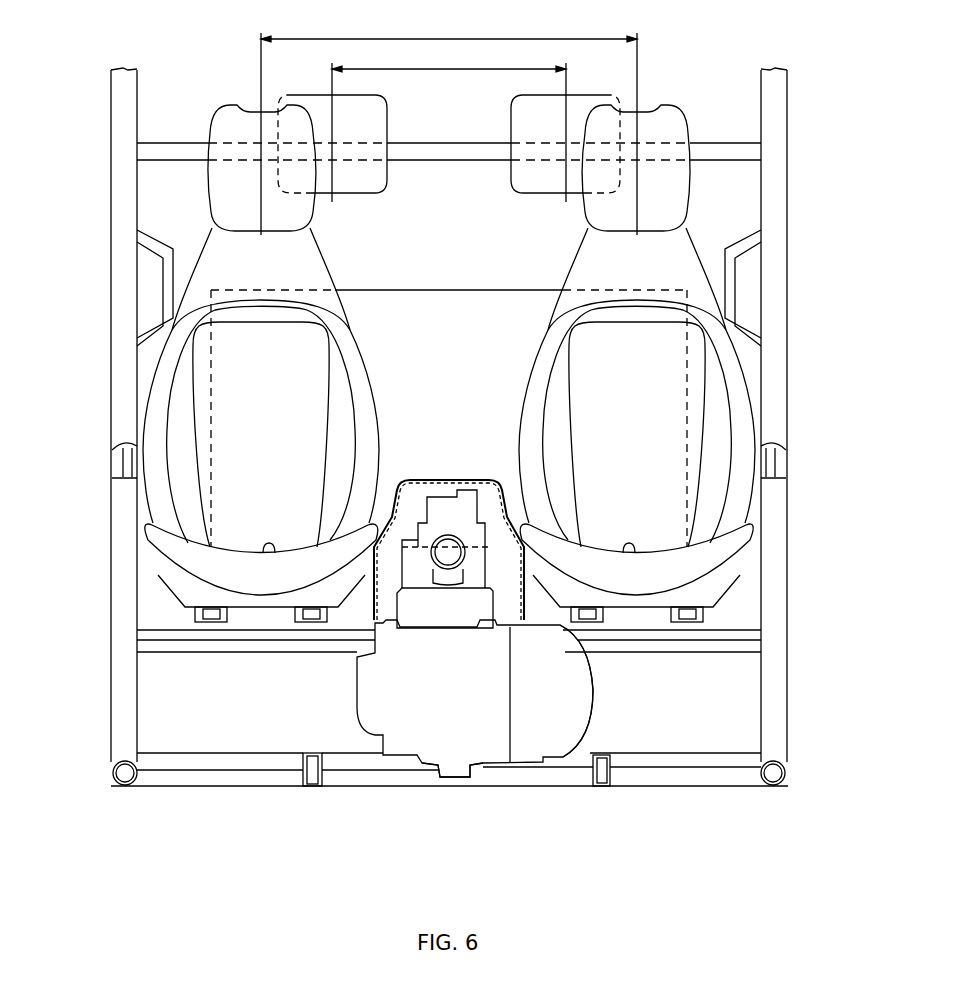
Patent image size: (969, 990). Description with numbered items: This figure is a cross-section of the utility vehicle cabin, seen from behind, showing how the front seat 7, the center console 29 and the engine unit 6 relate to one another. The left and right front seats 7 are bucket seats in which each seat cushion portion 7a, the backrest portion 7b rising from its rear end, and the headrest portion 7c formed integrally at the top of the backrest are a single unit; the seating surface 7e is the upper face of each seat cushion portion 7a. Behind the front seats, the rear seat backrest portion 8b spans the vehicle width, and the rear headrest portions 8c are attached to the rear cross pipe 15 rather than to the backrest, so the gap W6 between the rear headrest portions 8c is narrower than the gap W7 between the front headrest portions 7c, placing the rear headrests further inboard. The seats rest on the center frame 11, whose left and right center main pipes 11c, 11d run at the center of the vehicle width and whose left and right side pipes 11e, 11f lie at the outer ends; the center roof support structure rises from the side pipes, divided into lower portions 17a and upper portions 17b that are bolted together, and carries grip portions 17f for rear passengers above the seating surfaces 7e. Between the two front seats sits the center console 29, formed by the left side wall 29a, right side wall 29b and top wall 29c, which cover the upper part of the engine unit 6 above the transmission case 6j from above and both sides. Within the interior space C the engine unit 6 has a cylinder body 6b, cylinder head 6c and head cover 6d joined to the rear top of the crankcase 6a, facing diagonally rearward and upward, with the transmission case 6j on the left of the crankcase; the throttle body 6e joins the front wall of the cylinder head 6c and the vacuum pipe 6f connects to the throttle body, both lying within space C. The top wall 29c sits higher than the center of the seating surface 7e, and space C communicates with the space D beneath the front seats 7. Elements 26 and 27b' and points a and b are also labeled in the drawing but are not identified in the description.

The gap of the front seat headrest portions W7 is at (408, 38).
The gap of the rear seat headrest portions W6 is at (474, 38).
The engine unit 6 is at (475, 623).
The crankcase 6a is at (403, 740).
The cylinder body 6b is at (412, 622).
The cylinder head 6c is at (420, 580).
The head cover 6d is at (408, 540).
The throttle body 6e is at (442, 497).
The vacuum pipe 6f is at (447, 572).
The transmission case 6j is at (550, 737).
The front seat 7 is at (449, 335).
The seat cushion portion 7a is at (215, 563).
The backrest portion 7b is at (373, 401).
The headrest portion 7c is at (218, 107).
The seating surface 7e is at (255, 547).
The backrest portion of the rear seat 8b is at (433, 288).
The headrest portions of the rear seat 8c is at (287, 97).
The center frame 11 is at (506, 800).
The left center main pipe 11c is at (612, 770).
The right center main pipe 11d is at (300, 770).
The left side pipe 11e is at (787, 775).
The right side pipe 11f is at (112, 776).
The rear cross pipe 15 is at (428, 142).
The lower portions of the center roof support structure 17a is at (111, 588).
The upper portions of the center roof support structure 17b is at (110, 268).
The grip portions 17f is at (165, 240).
The seat mounting foot 26 is at (313, 625).
The seat cross member 27b' is at (449, 670).
The center console 29 is at (446, 514).
The left side wall 29a is at (538, 562).
The right side wall 29b is at (372, 576).
The top wall 29c is at (475, 473).
The cushion inner point a is at (265, 555).
The bolster point b is at (155, 520).
The interior space of the center console C is at (490, 545).
The space below the front seats D is at (655, 720).